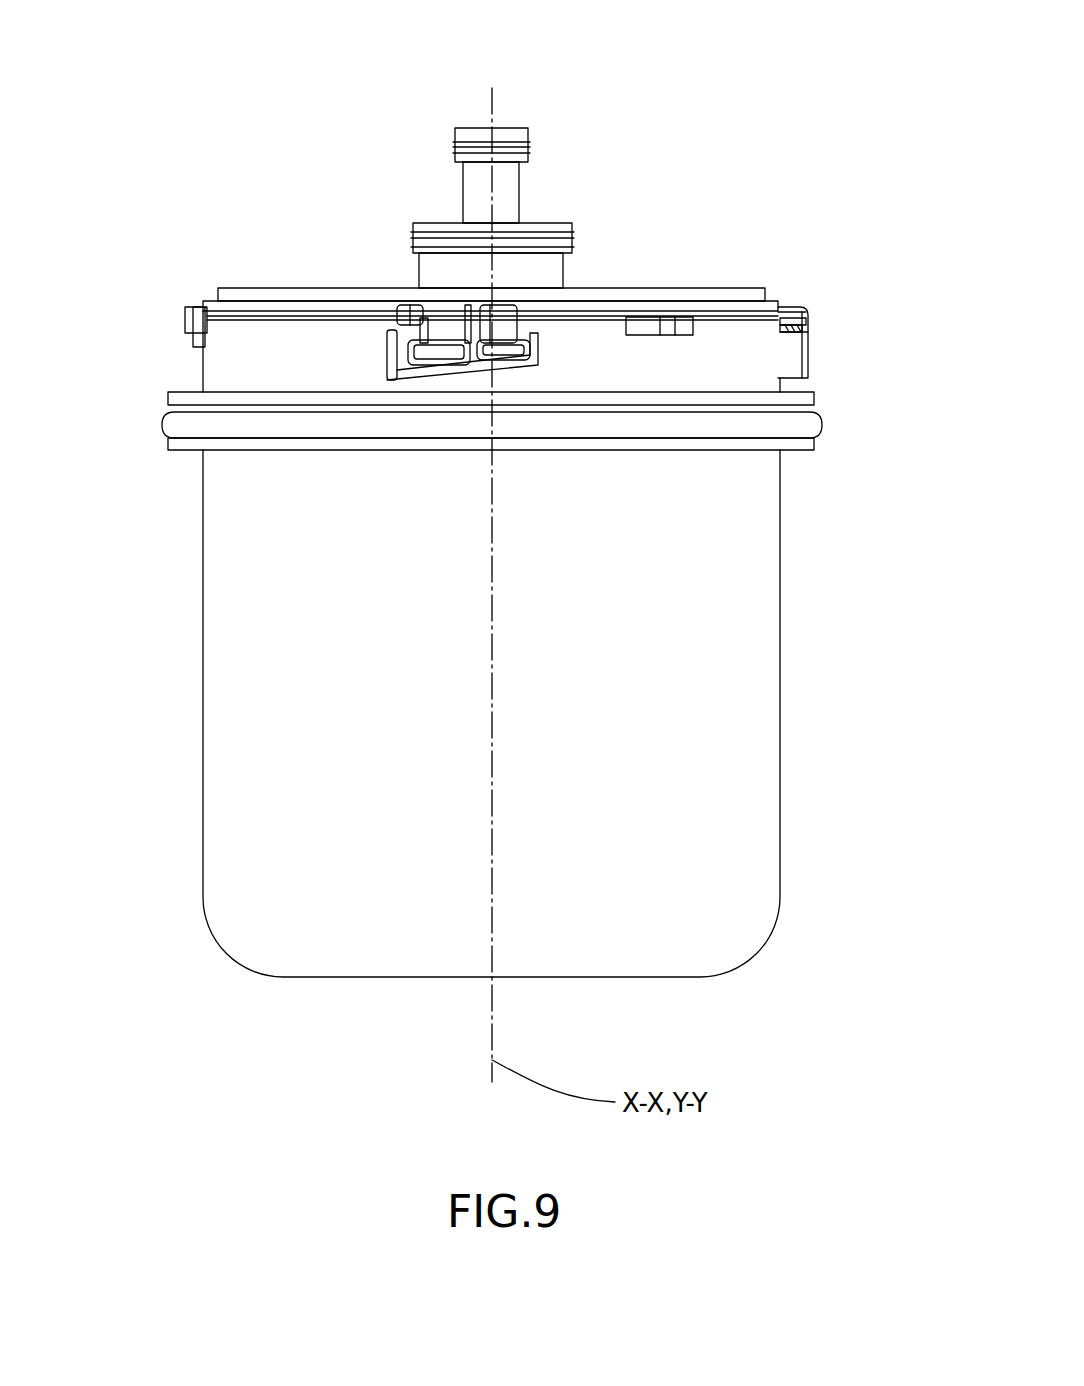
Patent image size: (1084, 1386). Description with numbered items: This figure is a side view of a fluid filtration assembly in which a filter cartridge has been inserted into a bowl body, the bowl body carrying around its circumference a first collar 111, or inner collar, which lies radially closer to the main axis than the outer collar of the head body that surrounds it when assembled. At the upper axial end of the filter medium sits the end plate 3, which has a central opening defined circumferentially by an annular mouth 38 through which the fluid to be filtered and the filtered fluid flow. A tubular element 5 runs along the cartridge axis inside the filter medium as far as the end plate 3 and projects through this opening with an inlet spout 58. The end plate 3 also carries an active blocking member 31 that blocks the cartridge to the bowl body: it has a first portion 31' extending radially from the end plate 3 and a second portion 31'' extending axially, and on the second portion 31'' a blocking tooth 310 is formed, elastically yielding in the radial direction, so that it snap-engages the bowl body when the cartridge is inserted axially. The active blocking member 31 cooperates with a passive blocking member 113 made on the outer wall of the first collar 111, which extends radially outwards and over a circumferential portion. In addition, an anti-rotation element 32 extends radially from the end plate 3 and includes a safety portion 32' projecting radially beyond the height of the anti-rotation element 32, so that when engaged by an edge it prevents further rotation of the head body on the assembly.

The end plate 3 is at (227, 287).
The tubular element 5 is at (492, 146).
The active blocking member 31 is at (587, 259).
The first portion 31' is at (764, 244).
The second portion 31'' is at (862, 349).
The anti-rotation element 32 is at (659, 275).
The safety portion 32' is at (630, 259).
The annular mouth 38 is at (387, 222).
The inlet spout 58 is at (505, 187).
The first collar 111 is at (167, 367).
The passive blocking member 113 is at (380, 358).
The blocking tooth 310 is at (808, 322).